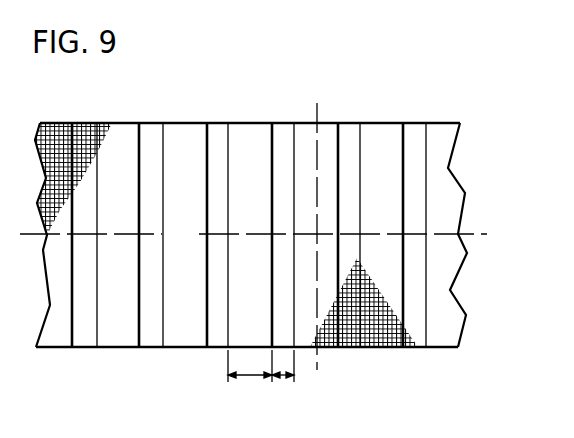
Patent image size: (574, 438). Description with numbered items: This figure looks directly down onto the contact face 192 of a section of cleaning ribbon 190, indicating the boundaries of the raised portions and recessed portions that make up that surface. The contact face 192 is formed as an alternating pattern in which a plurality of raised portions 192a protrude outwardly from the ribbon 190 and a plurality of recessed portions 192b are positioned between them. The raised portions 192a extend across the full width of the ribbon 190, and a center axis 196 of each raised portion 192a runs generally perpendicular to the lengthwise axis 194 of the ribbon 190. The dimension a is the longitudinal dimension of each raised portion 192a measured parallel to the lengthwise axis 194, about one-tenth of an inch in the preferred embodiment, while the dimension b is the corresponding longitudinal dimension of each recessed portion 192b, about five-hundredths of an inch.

The cleaning ribbon 190 is at (251, 255).
The contact face 192 is at (194, 241).
The raised portions 192a is at (252, 130).
The recessed portions 192b is at (283, 130).
The lengthwise axis 194 is at (476, 234).
The center axis 196 is at (318, 114).
The longitudinal dimension of raised portion a is at (248, 378).
The longitudinal dimension of recessed portion b is at (283, 378).